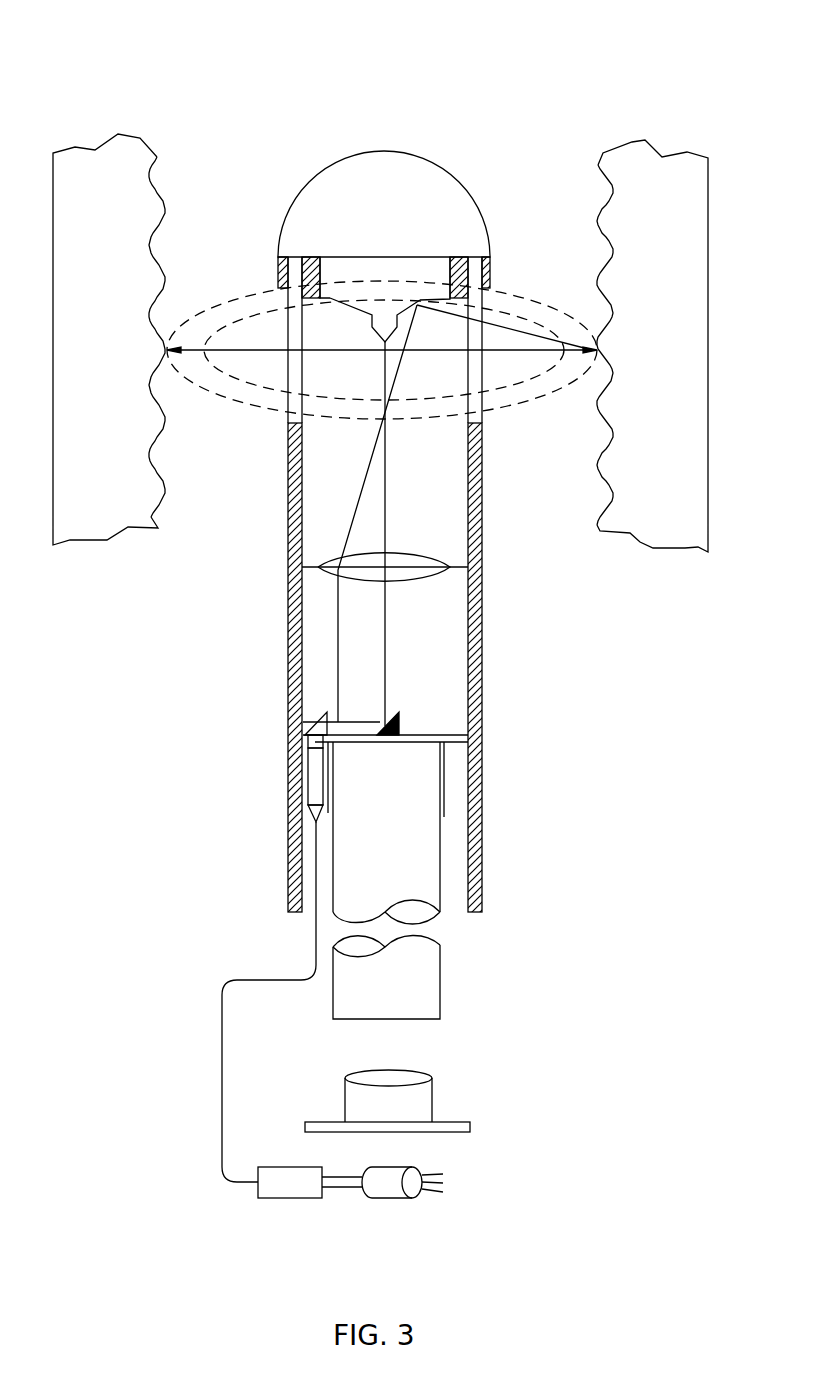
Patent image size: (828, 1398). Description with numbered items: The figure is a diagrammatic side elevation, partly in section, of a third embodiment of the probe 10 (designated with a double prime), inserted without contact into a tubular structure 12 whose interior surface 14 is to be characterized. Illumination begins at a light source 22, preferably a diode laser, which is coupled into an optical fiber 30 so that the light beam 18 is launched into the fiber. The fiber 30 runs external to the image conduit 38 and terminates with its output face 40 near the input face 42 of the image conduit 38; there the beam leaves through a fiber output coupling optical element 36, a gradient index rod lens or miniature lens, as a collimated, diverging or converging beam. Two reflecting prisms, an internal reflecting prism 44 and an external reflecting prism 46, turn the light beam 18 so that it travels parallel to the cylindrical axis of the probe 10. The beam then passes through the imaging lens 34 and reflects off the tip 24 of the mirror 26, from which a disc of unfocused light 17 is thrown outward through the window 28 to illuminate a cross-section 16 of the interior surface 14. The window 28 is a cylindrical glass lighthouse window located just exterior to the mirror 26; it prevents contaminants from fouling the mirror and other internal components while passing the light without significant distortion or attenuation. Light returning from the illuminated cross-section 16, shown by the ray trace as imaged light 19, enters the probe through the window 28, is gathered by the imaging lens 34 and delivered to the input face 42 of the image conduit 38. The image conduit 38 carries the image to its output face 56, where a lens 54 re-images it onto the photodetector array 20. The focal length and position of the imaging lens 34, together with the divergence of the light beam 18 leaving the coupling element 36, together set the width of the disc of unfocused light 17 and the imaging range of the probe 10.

The probe 10 is at (480, 137).
The tubular structure 12 is at (110, 358).
The interior surface 14 is at (165, 220).
The cross-section 16 is at (498, 405).
The disc of unfocused light 17 is at (408, 400).
The light beam 18 is at (386, 462).
The imaged light 19 is at (513, 330).
The photodetector array 20 is at (458, 1122).
The light source 22 is at (398, 1190).
The tip 24 is at (372, 322).
The mirror 26 is at (404, 291).
The window 28 is at (275, 318).
The optical fiber 30 is at (222, 1102).
The imaging lens 34 is at (408, 563).
The fiber output coupling optical element 36 is at (308, 792).
The image conduit 38 is at (404, 859).
The output face 40 is at (306, 747).
The input face 42 is at (422, 742).
The internal reflecting prism 44 is at (303, 722).
The external reflecting prism 46 is at (399, 712).
The lens 54 is at (397, 1076).
The output face 56 is at (442, 997).